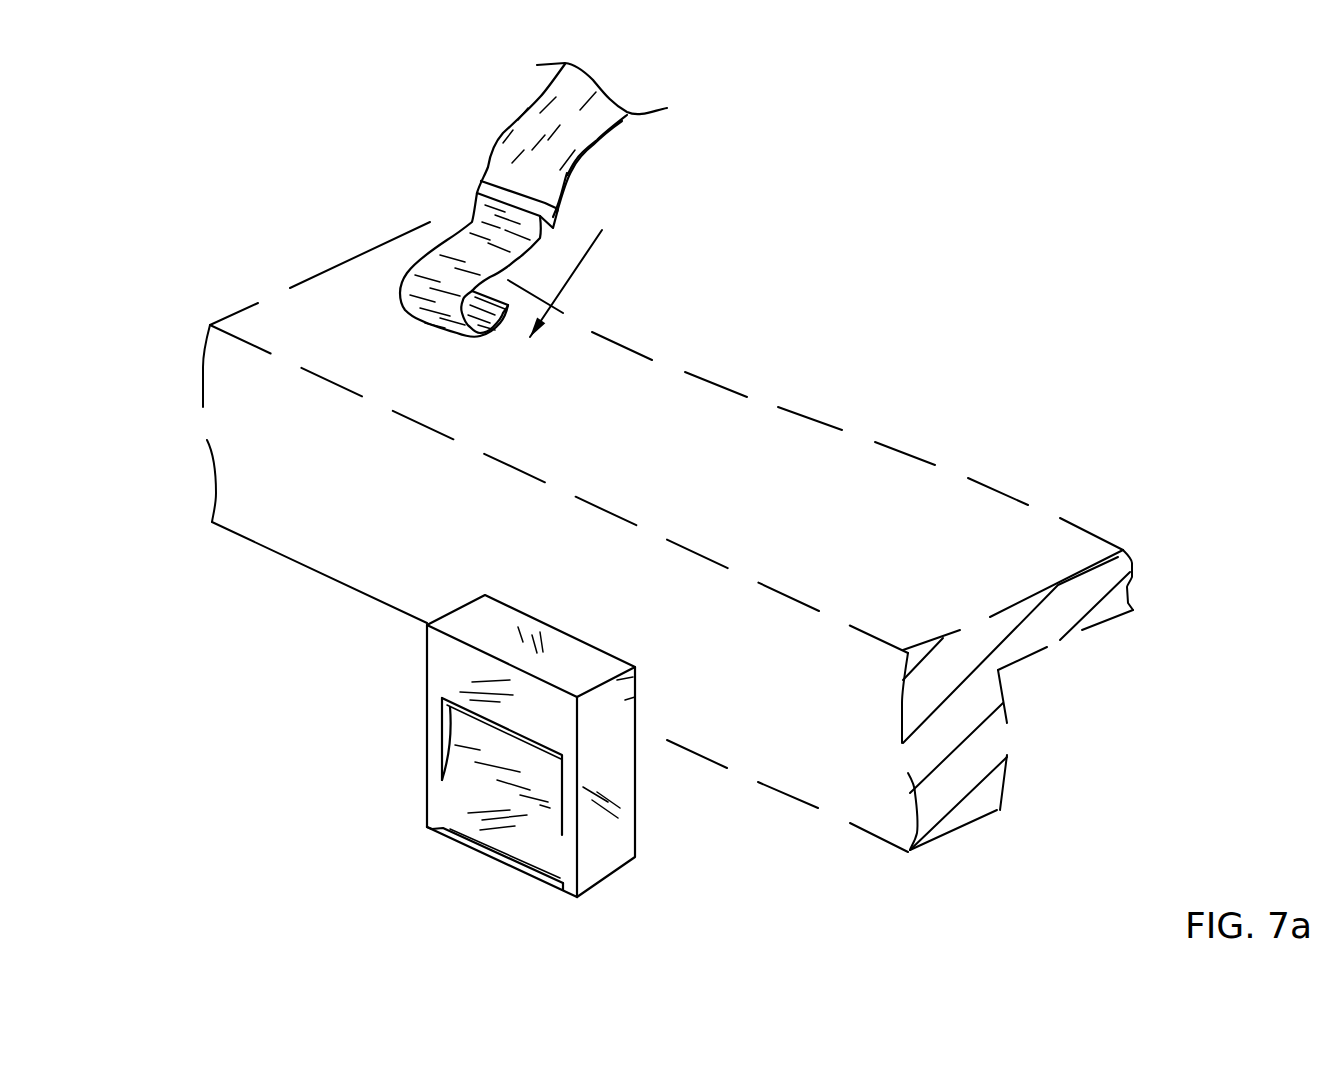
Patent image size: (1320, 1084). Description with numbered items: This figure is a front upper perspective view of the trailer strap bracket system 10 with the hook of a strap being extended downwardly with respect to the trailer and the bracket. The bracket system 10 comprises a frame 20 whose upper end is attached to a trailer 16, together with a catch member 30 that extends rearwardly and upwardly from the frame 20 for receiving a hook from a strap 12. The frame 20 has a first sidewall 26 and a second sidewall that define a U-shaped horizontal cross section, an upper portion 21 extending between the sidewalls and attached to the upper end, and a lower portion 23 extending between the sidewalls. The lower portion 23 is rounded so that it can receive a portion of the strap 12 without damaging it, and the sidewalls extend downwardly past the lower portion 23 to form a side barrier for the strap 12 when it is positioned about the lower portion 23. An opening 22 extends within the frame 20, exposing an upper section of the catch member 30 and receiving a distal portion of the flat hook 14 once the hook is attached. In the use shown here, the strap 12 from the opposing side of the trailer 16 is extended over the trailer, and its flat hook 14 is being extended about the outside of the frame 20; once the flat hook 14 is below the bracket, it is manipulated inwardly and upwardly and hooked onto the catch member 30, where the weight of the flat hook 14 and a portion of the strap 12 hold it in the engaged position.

The trailer strap bracket system 10 is at (260, 862).
The strap 12 is at (607, 140).
The flat hook 14 is at (470, 221).
The trailer 16 is at (802, 438).
The frame 20 is at (640, 758).
The upper portion 21 is at (435, 647).
The opening 22 is at (447, 705).
The lower portion 23 is at (502, 856).
The first sidewall 26 is at (617, 857).
The catch member 30 is at (447, 740).